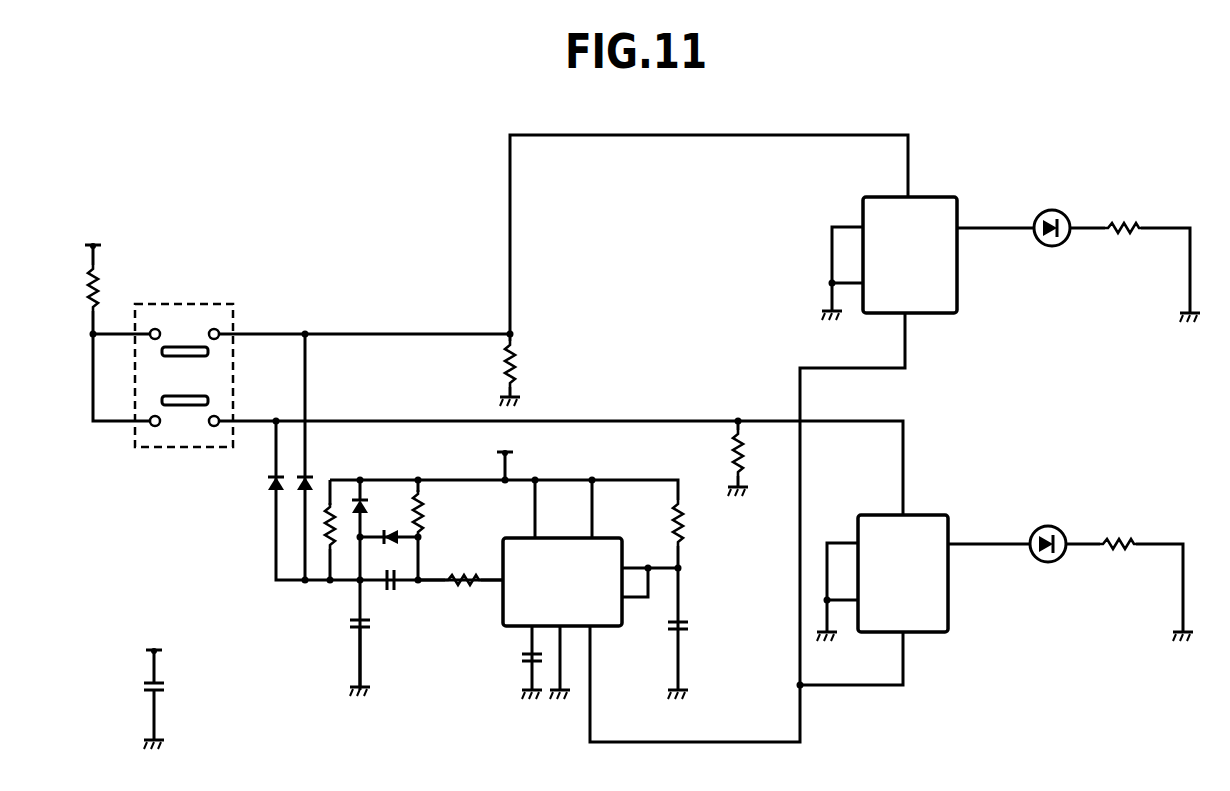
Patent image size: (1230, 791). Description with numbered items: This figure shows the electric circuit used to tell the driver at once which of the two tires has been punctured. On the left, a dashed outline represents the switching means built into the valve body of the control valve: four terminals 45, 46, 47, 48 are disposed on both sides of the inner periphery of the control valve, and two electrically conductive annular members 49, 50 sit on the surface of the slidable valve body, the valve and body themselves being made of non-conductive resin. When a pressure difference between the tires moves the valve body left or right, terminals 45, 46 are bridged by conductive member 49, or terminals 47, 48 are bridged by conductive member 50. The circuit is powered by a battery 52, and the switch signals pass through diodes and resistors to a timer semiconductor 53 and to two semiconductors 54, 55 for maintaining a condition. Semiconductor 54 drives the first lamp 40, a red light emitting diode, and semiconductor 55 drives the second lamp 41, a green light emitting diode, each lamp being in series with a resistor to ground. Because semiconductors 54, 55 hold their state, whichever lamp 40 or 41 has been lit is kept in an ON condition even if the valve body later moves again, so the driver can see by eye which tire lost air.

The first lamp 40 is at (1050, 208).
The second lamp 41 is at (1045, 525).
The terminal 45 is at (216, 428).
The terminal 46 is at (153, 428).
The terminal 47 is at (216, 328).
The terminal 48 is at (151, 340).
The electrically conductive annular member 49 is at (190, 407).
The electrically conductive annular member 50 is at (210, 352).
The battery 52 is at (146, 688).
The timer semiconductor 53 is at (503, 605).
The semiconductor for maintaining a condition 54 is at (940, 197).
The semiconductor for maintaining a condition 55 is at (932, 515).